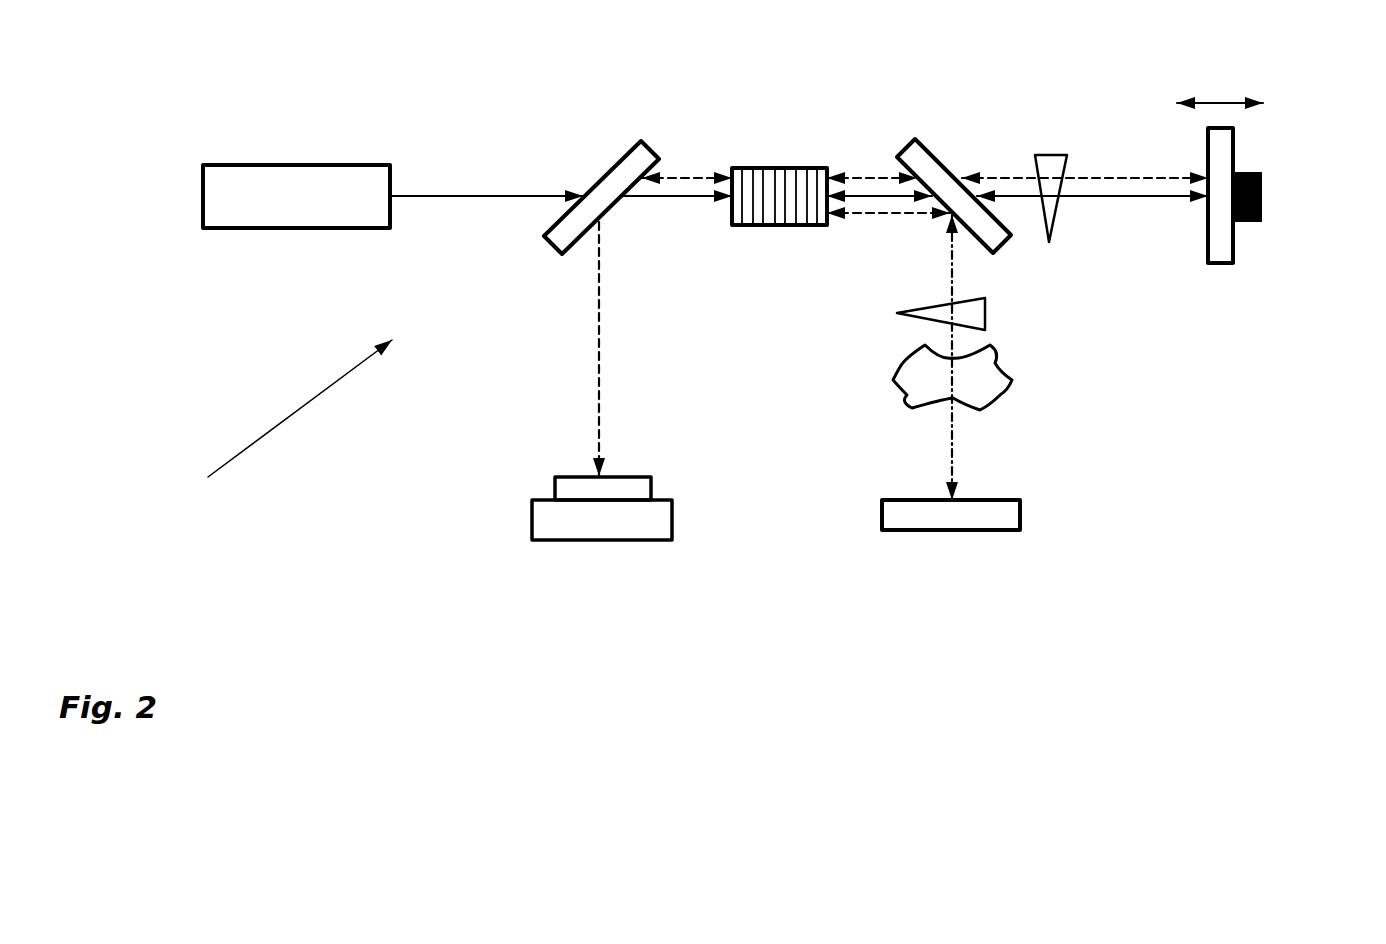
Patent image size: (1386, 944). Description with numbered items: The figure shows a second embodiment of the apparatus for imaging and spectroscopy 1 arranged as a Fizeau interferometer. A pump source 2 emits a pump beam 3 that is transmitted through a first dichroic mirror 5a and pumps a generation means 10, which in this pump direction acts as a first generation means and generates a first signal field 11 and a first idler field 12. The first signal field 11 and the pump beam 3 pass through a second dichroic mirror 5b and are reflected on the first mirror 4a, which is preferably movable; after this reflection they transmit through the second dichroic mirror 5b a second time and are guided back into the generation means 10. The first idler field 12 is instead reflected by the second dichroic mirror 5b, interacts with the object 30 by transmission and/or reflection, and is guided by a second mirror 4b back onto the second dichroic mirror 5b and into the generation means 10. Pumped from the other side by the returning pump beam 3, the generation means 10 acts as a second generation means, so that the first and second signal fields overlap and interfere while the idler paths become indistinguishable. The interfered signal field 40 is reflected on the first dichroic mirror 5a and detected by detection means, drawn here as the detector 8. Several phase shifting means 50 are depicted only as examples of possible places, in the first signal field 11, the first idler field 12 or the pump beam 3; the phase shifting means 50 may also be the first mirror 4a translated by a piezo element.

The apparatus for imaging and spectroscopy 1 is at (282, 433).
The pump source 2 is at (268, 188).
The pump beam 3 is at (466, 190).
The first dichroic mirror 5a is at (627, 173).
The second dichroic mirror 5b is at (940, 158).
The detector 8 is at (628, 527).
The generation means 10 is at (788, 215).
The first signal field 11 is at (887, 178).
The first idler field 12 is at (890, 217).
The object 30 is at (985, 382).
The interfered signal field 40 is at (693, 178).
The first mirror 4a is at (1217, 243).
The second mirror 4b is at (890, 510).
The phase shifting means 50 is at (1220, 145).